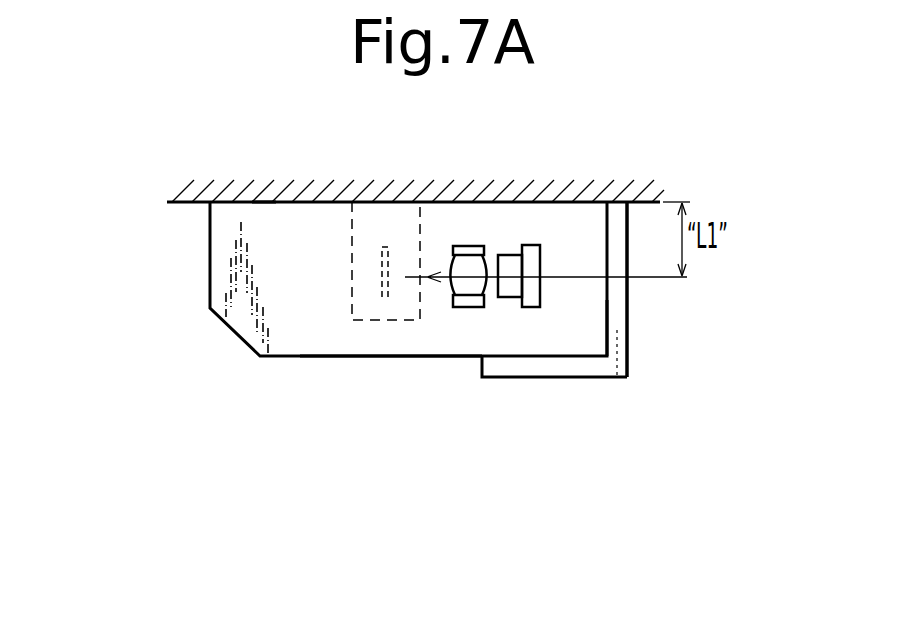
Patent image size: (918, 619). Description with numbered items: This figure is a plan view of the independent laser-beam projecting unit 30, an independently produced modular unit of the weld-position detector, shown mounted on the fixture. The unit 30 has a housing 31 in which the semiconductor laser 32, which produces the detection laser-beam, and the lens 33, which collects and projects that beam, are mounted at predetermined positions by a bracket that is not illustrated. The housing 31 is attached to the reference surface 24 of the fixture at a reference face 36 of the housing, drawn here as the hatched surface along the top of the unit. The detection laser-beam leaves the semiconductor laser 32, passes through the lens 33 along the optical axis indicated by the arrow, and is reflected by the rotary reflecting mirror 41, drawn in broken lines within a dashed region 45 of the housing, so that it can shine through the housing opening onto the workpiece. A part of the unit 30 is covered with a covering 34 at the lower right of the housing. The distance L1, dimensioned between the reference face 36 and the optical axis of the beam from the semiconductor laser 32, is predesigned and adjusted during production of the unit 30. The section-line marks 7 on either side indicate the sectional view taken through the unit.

The section line 7- 7 is at (173, 278).
The reference surface 24 is at (180, 203).
The laser-beam projecting unit 30 is at (387, 355).
The housing 31 is at (422, 358).
The semiconductor laser 32 is at (531, 248).
The lens 33 is at (470, 248).
The covering 34 is at (603, 378).
The reference face 36 is at (263, 200).
The rotary reflecting mirror 41 is at (383, 300).
The light source region 45 is at (351, 304).